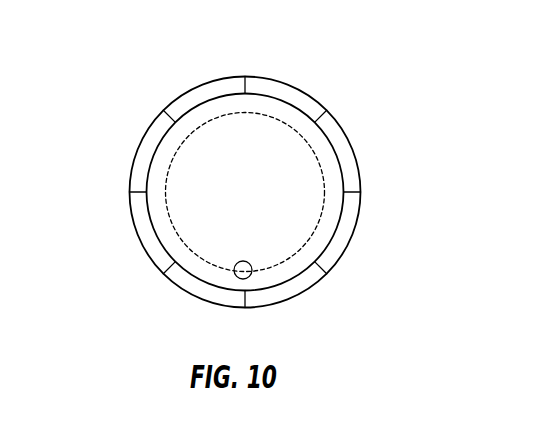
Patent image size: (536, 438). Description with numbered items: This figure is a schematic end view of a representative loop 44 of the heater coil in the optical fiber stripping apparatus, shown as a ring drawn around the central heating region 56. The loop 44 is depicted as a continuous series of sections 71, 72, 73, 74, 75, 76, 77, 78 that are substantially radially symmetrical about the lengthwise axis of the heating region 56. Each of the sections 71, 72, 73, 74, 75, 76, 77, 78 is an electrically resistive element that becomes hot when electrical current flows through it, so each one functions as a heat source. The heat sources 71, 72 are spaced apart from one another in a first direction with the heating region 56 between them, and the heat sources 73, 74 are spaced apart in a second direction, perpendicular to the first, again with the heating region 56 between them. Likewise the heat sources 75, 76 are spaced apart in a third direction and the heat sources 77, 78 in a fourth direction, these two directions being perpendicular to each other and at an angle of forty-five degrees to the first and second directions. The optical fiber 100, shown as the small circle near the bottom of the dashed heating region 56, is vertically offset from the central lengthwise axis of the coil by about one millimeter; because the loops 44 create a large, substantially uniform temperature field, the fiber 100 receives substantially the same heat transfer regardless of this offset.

The loop 44 is at (110, 100).
The central heating region 56 is at (308, 140).
The optical fiber 100 is at (243, 261).
The section 71 is at (202, 93).
The section 72 is at (278, 295).
The section 73 is at (138, 237).
The section 74 is at (343, 160).
The section 75 is at (138, 148).
The section 76 is at (355, 235).
The section 77 is at (183, 290).
The section 78 is at (293, 97).